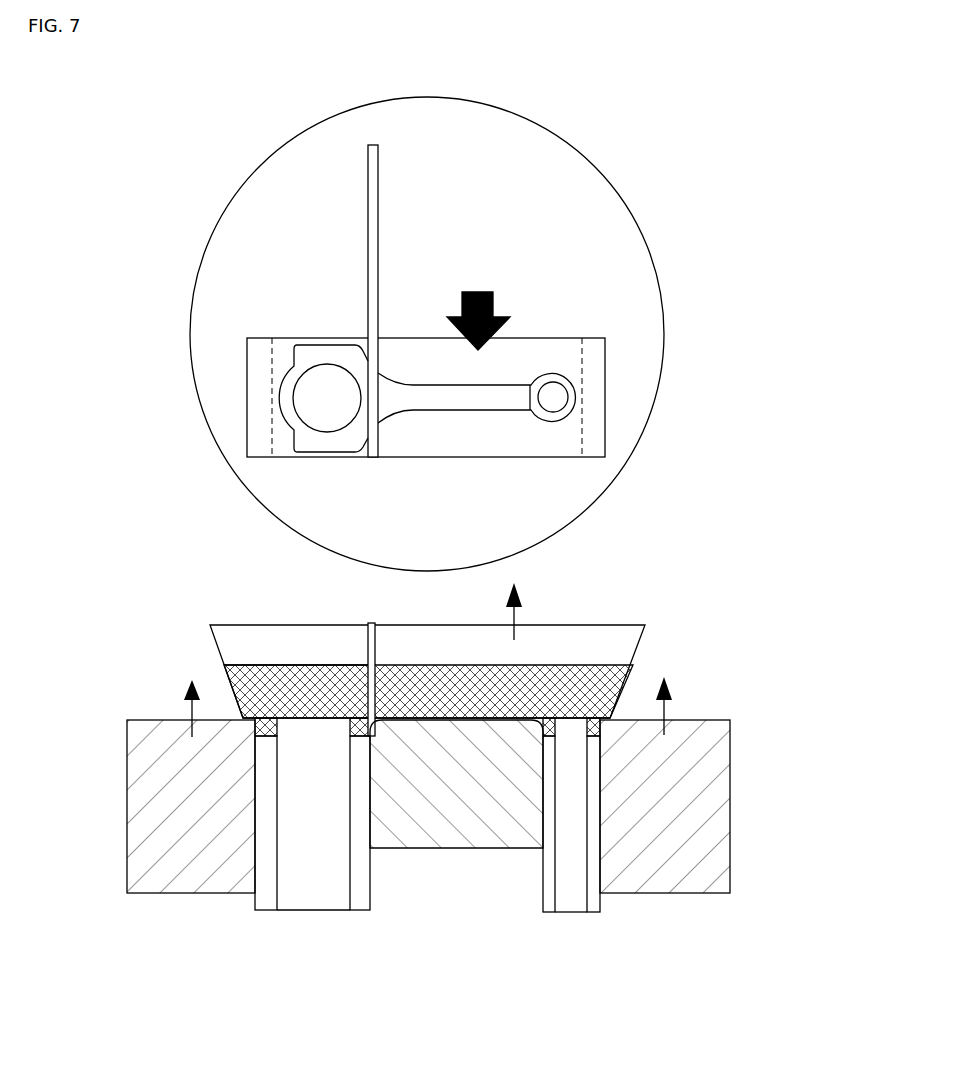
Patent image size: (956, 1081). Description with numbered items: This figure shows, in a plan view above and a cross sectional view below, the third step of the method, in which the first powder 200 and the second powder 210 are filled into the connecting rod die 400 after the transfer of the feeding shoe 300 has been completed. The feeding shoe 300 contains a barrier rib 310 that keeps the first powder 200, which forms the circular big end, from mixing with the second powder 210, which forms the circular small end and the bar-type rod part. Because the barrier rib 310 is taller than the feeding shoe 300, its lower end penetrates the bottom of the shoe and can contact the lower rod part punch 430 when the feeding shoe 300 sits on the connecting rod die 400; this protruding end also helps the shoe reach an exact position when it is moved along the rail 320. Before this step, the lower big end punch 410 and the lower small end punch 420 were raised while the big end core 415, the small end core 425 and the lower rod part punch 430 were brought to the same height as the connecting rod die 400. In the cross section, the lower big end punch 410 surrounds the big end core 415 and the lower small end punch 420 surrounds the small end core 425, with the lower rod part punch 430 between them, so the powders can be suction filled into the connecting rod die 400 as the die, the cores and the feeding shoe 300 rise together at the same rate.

The first powder 200 is at (262, 678).
The second powder 210 is at (607, 678).
The feeding shoe 300 is at (600, 395).
The barrier rib 310 is at (370, 640).
The rail 320 is at (370, 178).
The connecting rod die 400 is at (615, 245).
The lower big end punch 410 is at (265, 888).
The big end core 415 is at (315, 865).
The lower small end punch 420 is at (548, 895).
The small end core 425 is at (570, 865).
The lower rod part punch 430 is at (450, 825).